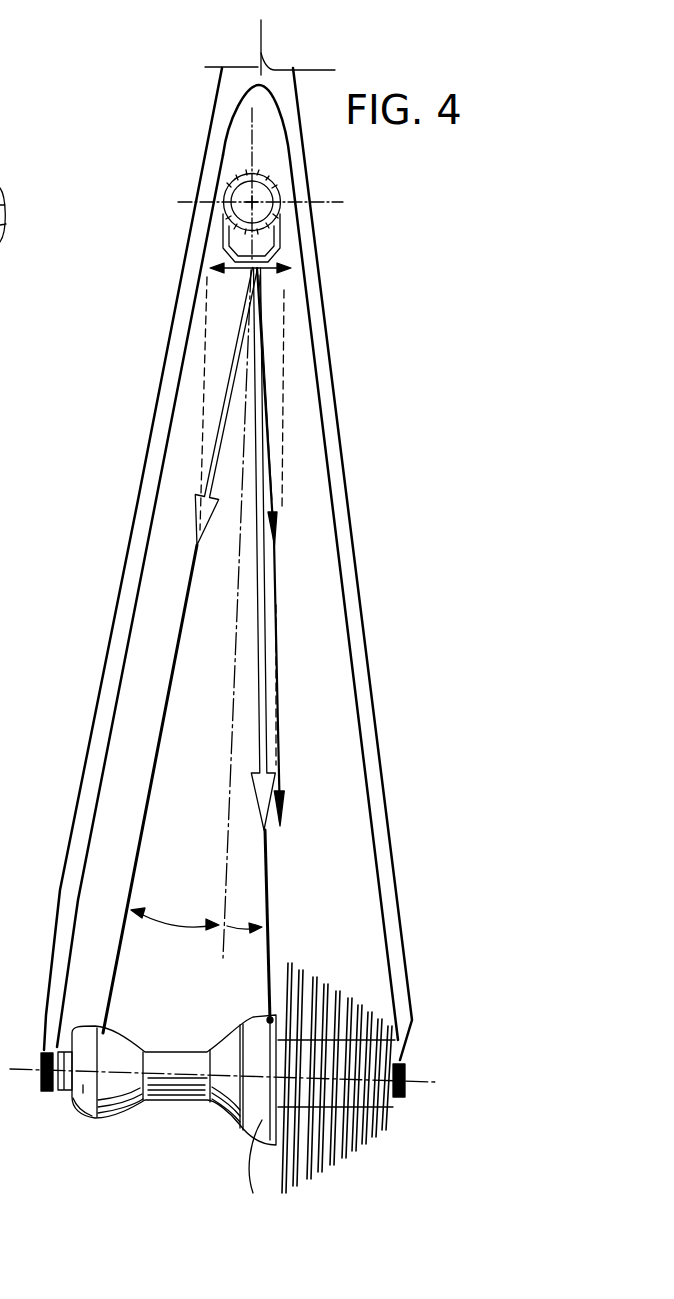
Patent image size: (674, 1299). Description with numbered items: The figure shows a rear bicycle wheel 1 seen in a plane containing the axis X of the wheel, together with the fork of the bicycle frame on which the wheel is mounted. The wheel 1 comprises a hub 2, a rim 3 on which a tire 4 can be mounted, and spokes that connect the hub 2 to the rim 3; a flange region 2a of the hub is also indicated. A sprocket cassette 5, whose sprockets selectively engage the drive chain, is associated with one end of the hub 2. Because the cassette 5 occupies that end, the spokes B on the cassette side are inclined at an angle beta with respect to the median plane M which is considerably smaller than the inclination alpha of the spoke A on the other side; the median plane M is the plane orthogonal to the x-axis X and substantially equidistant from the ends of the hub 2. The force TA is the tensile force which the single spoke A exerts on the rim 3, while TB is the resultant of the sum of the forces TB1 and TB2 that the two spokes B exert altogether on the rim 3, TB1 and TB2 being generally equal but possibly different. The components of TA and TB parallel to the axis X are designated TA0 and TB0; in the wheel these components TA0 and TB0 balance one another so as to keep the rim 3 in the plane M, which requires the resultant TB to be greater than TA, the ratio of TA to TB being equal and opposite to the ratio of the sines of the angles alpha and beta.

The bicycle wheel 1 is at (388, 481).
The hub 2 is at (163, 1103).
The hub flange 2a is at (84, 1085).
The rim 3 is at (281, 243).
The tire 4 is at (268, 185).
The sprocket cassette 5 is at (339, 979).
The spoke A is at (168, 663).
The spokes B is at (268, 853).
The median plane M is at (232, 773).
The x-axis of the hub X is at (420, 1080).
The horizontal component of force TA TA0 is at (222, 274).
The horizontal component of force TB TB0 is at (272, 274).
The tensile force of spoke A TA is at (212, 438).
The resultant tensile force of spokes B TB is at (266, 643).
The tensile force of first spoke B TB1 is at (274, 452).
The tensile force of second spoke B TB2 is at (281, 753).
The inclination angle of spoke A alpha is at (175, 935).
The inclination angle of spokes B beta is at (244, 949).